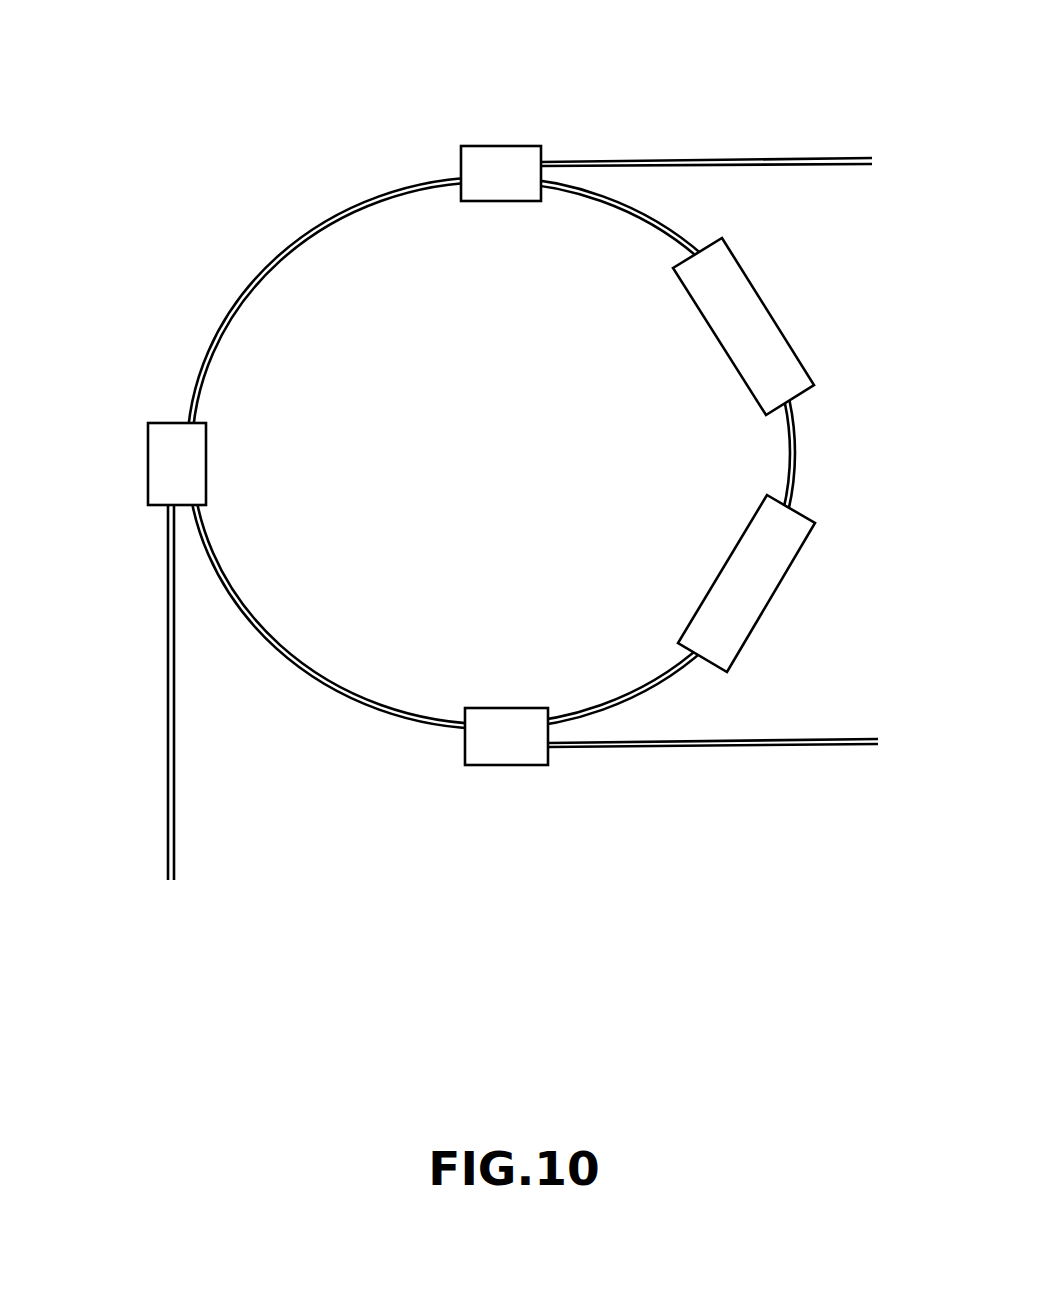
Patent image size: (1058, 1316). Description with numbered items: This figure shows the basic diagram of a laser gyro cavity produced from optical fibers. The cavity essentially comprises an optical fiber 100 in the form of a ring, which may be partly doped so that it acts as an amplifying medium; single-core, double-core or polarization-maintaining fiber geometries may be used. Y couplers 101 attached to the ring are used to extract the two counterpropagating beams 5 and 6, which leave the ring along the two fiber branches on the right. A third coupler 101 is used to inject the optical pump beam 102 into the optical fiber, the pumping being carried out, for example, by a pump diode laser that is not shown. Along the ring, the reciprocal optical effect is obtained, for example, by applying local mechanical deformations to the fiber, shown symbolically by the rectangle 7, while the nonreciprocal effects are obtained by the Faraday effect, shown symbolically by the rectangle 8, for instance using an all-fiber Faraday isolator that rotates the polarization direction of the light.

The optical fiber 100 is at (263, 263).
The Y coupler 101 is at (505, 172).
The optical pump beam 102 is at (167, 780).
The counterpropagating beam 5 is at (747, 158).
The counterpropagating beam 6 is at (837, 742).
The rectangle 7 is at (773, 556).
The rectangle 8 is at (762, 332).